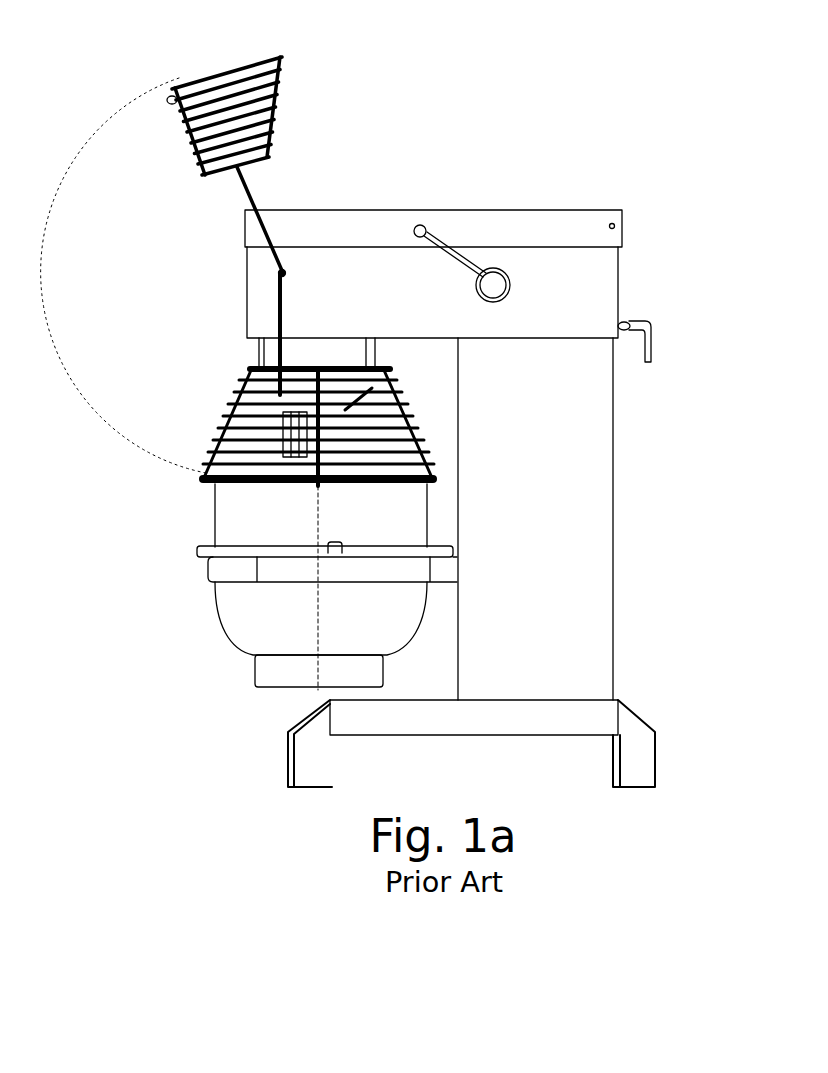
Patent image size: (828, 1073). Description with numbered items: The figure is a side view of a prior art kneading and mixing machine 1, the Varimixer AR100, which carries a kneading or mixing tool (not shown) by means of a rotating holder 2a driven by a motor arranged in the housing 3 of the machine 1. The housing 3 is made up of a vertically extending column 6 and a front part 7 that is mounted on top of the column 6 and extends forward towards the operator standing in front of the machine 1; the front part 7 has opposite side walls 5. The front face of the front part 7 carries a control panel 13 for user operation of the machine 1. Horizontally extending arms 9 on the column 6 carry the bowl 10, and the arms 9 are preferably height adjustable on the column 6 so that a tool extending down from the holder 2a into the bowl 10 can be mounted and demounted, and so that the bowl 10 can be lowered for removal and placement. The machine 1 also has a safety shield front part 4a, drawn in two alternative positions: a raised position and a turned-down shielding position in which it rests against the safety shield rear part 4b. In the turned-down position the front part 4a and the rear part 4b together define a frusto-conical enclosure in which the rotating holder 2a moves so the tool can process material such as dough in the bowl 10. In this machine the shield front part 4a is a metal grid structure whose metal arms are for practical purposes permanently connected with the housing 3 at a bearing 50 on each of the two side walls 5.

The kneading and mixing machine 1 is at (643, 176).
The rotating holder 2a is at (235, 412).
The housing 3 is at (632, 272).
The safety shield front part 4a is at (192, 78).
The safety shield rear part 4b is at (403, 404).
The side walls 5 is at (342, 310).
The column 6 is at (536, 507).
The front part 7 is at (405, 210).
The arms 9 is at (203, 568).
The bowl 10 is at (286, 627).
The control panel 13 is at (247, 292).
The bearing 50 is at (285, 268).